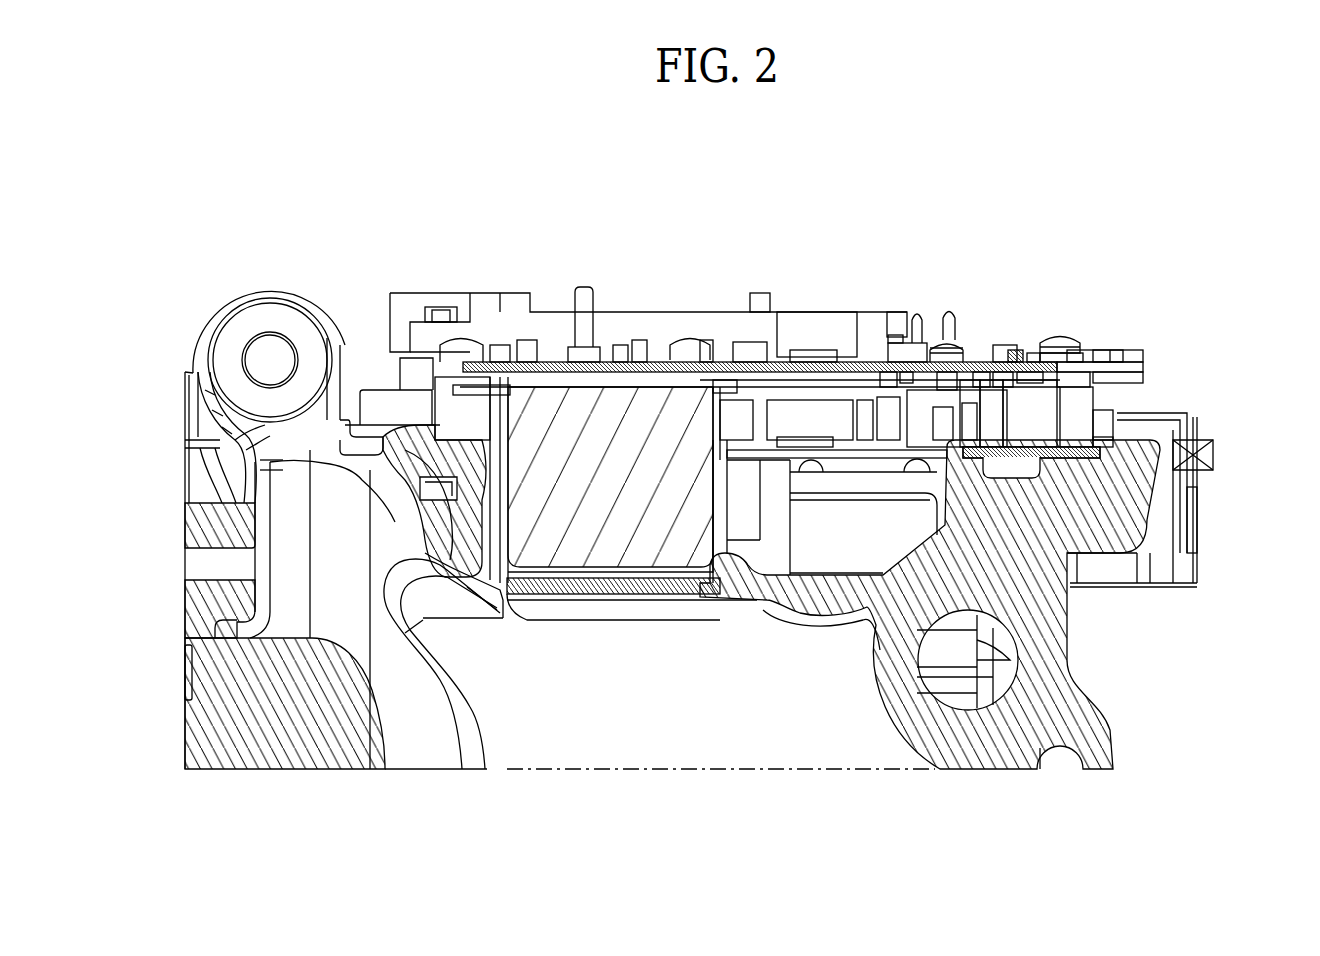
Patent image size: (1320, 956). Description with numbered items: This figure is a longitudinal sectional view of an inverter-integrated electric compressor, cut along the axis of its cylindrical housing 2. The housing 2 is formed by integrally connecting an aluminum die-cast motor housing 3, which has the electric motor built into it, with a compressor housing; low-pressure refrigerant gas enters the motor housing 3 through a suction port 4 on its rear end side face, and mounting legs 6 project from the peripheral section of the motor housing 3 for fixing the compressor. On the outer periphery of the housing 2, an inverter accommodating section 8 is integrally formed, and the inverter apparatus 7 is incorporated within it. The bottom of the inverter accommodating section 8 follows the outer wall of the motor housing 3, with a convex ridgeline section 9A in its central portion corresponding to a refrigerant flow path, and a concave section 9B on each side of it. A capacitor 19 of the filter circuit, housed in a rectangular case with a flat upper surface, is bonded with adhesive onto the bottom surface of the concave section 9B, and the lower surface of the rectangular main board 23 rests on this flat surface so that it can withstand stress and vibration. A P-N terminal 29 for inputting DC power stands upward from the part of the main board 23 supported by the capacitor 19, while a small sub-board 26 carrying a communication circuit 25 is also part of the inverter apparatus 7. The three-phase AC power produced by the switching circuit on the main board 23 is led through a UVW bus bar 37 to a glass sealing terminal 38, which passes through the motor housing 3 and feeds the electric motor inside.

The housing 2 is at (343, 770).
The motor housing 3 is at (722, 733).
The suction port 4 is at (950, 700).
The mounting leg 6 is at (265, 320).
The inverter apparatus 7 is at (975, 313).
The inverter accommodating section 8 is at (1167, 474).
The convex ridgeline section 9A is at (848, 467).
The concave section 9B is at (617, 560).
The capacitor 19 is at (620, 423).
The main board 23 is at (805, 363).
The communication circuit 25 is at (808, 413).
The sub-board 26 is at (893, 447).
The P-N terminal 29 is at (582, 283).
The UVW bus bar 37 is at (513, 327).
The glass sealing terminal 38 is at (403, 403).